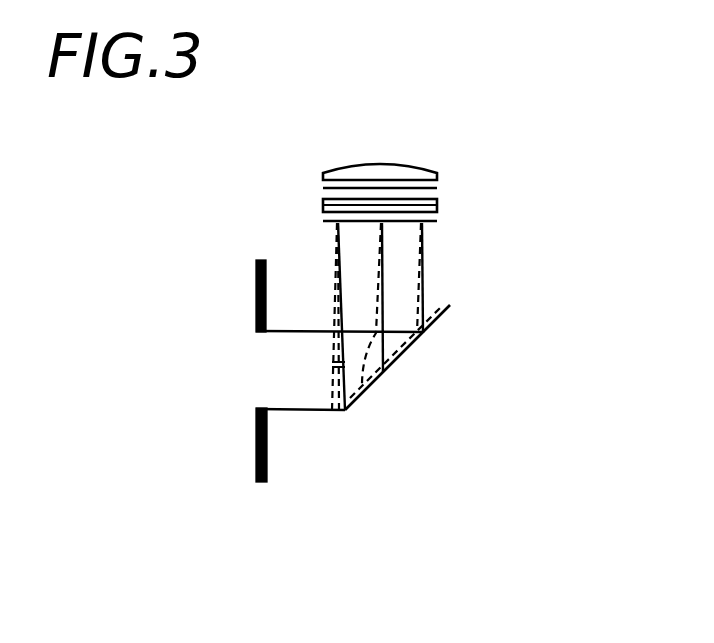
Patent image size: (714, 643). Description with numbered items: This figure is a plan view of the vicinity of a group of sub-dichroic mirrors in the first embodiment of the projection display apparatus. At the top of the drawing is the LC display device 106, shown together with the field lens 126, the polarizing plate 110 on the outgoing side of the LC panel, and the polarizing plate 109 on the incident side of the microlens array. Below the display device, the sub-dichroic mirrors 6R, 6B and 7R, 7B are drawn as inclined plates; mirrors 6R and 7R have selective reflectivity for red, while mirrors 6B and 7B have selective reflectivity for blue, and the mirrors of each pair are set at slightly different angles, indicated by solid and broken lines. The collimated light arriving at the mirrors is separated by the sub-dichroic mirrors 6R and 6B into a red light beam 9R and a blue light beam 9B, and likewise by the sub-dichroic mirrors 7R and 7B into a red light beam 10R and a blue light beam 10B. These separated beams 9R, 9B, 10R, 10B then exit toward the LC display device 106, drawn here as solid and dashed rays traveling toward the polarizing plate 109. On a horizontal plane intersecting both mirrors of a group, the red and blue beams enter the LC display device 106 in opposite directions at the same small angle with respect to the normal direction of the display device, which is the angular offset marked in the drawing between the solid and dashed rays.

The field lens 126 is at (383, 162).
The polarizing plate 110 is at (434, 125).
The LC display device 106 is at (323, 202).
The polarizing plate 109 is at (437, 217).
The blue light beam 9B is at (467, 316).
The blue light beam 10B is at (423, 296).
The red light beam 9R is at (359, 340).
The red light beam 10R is at (333, 305).
The sub-dichroic mirror 6B is at (450, 357).
The sub-dichroic mirror 7B is at (420, 334).
The sub-dichroic mirror 6R is at (377, 429).
The sub-dichroic mirror 7R is at (327, 412).